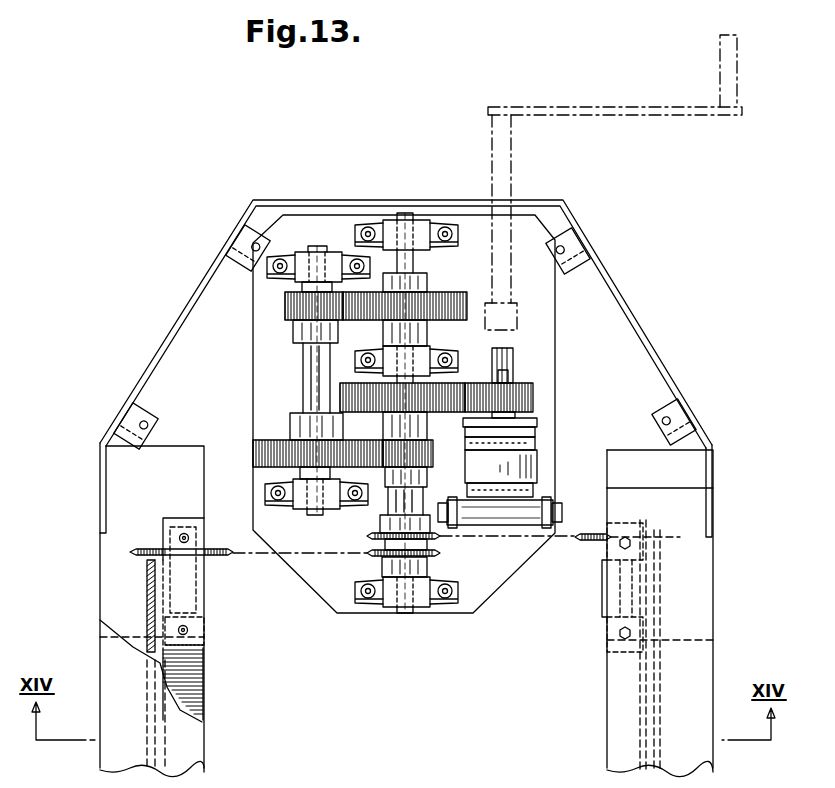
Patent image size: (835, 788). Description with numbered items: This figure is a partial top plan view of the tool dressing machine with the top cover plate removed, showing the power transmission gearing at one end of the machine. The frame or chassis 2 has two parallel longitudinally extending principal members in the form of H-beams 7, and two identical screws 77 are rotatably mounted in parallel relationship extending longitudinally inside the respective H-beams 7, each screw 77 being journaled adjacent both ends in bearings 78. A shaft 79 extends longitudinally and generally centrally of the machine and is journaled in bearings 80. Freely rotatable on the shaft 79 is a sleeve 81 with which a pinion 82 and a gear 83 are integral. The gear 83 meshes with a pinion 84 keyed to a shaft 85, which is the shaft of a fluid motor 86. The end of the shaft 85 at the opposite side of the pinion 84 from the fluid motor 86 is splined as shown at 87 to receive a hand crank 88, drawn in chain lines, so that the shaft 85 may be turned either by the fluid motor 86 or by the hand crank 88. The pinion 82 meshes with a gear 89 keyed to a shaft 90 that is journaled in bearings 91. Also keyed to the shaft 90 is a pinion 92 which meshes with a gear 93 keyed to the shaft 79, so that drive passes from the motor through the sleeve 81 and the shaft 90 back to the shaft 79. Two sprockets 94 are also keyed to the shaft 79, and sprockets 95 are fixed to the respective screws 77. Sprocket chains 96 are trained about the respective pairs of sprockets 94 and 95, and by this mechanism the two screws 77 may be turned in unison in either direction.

The frame or chassis 2 is at (607, 752).
The H-beam 7 is at (185, 748).
The screw 77 is at (193, 682).
The bearing 78 is at (205, 602).
The shaft 79 is at (405, 218).
The bearing 80 is at (392, 235).
The sleeve 81 is at (428, 425).
The pinion 82 is at (432, 455).
The gear 83 is at (355, 398).
The pinion 84 is at (535, 399).
The shaft 85 is at (505, 378).
The fluid motor 86 is at (535, 465).
The splined end 87 is at (505, 357).
The hand crank 88 is at (512, 165).
The gear 89 is at (256, 449).
The shaft 90 is at (305, 386).
The bearing 91 is at (296, 262).
The pinion 92 is at (285, 312).
The gear 93 is at (440, 300).
The sprocket 94 is at (443, 556).
The sprocket 95 is at (233, 548).
The sprocket chain 96 is at (255, 558).